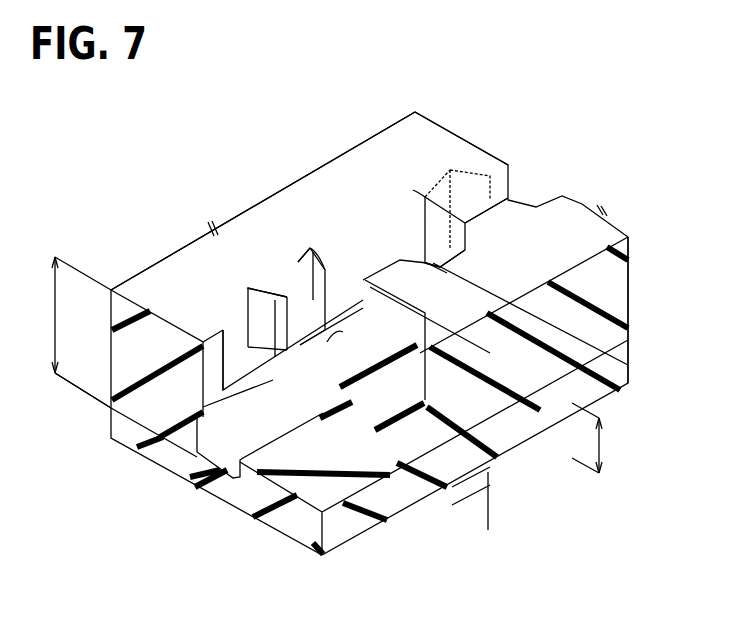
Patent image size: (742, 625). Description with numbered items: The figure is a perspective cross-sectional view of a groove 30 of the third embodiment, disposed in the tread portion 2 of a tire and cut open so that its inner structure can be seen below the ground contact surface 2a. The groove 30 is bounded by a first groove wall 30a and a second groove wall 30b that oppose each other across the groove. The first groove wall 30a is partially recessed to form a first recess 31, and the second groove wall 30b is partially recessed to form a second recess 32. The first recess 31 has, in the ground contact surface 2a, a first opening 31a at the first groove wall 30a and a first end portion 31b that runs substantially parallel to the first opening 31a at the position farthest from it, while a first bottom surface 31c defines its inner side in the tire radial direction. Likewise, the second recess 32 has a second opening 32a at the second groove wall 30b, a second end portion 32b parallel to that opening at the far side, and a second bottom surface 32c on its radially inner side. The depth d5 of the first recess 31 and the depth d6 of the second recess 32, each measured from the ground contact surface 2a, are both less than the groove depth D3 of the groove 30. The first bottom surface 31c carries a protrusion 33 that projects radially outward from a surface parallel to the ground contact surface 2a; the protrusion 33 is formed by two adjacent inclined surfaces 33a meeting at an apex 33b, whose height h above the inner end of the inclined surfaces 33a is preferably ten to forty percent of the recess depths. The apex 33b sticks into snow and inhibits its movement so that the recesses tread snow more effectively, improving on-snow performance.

The tread portion 2 is at (433, 90).
The ground contact surface 2a is at (403, 140).
The groove 30 is at (548, 182).
The first groove wall 30a is at (628, 365).
The second groove wall 30b is at (364, 242).
The first recess 31 is at (292, 275).
The first opening 31a is at (340, 236).
The first end portion 31b is at (320, 252).
The first bottom surface 31c is at (300, 290).
The second recess 32 is at (527, 188).
The second opening 32a is at (437, 177).
The second end portion 32b is at (470, 200).
The second bottom surface 32c is at (490, 460).
The protrusion 33 is at (165, 170).
The inclined surface 33a is at (230, 300).
The apex 33b is at (222, 322).
The groove depth D3 is at (68, 332).
The depth of first recess d5 is at (240, 215).
The depth of second recess d6 is at (600, 438).
The height of apex h is at (480, 498).